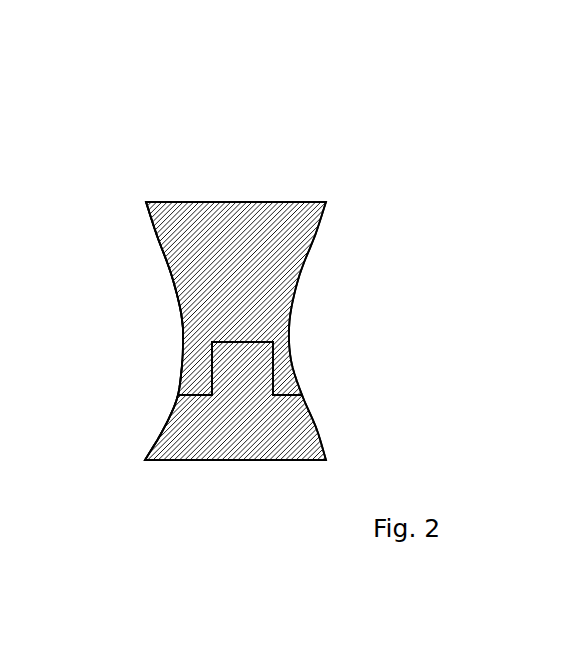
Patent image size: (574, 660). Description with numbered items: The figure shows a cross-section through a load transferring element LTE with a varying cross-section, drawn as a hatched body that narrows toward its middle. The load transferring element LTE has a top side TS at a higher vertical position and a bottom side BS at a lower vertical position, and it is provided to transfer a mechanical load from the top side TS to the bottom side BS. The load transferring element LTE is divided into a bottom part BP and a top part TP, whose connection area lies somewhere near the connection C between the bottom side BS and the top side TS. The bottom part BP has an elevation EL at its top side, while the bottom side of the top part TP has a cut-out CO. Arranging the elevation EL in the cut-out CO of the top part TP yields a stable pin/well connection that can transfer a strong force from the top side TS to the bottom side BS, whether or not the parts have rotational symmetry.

The load transferring element LTE is at (308, 92).
The connection C is at (332, 293).
The top side TS is at (163, 200).
The top part TP is at (173, 276).
The elevation EL is at (233, 365).
The cut-out CO is at (198, 368).
The bottom part BP is at (168, 415).
The bottom side BS is at (290, 460).